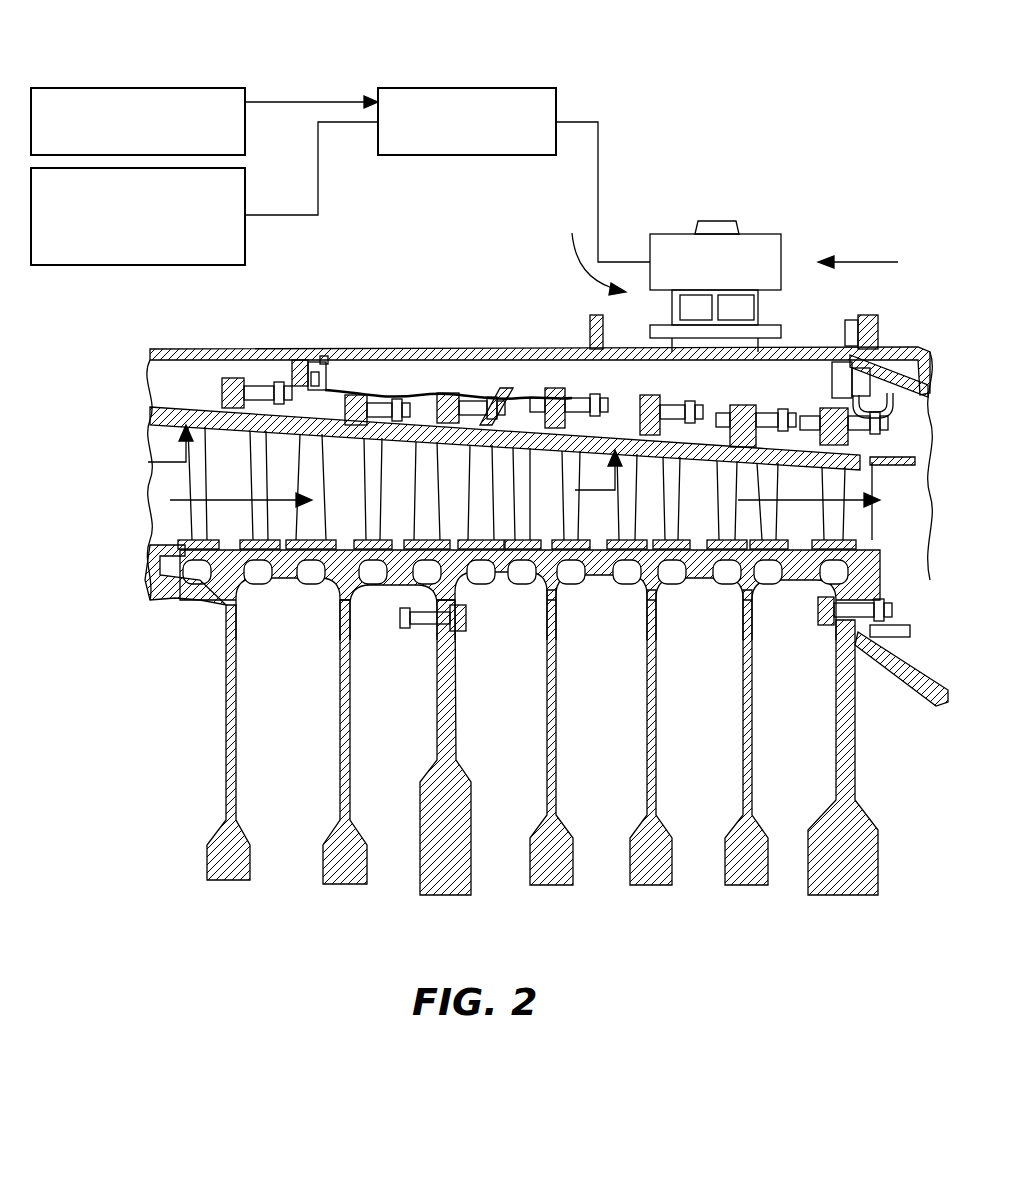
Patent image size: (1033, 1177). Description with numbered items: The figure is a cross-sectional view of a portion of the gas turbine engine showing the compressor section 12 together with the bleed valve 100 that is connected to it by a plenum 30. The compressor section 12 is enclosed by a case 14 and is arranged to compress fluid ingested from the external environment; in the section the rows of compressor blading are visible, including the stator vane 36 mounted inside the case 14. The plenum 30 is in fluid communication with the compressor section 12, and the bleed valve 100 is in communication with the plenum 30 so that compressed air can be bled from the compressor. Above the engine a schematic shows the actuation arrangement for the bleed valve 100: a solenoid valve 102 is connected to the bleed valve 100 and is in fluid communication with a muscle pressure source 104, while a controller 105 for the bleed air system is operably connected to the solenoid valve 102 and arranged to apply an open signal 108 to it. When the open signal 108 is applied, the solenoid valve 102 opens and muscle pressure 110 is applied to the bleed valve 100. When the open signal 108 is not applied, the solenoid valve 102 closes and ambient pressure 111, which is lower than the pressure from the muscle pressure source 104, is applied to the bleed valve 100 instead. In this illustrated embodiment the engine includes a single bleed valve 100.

The compressor section 12 is at (240, 934).
The case 14 is at (302, 350).
The plenum 30 is at (492, 383).
The stator vane 36 is at (497, 495).
The bleed valve 100 is at (670, 190).
The solenoid valve 102 is at (423, 88).
The muscle pressure source 104 is at (72, 266).
The controller 105 is at (98, 88).
The open signal 108 is at (307, 102).
The muscle pressure 110 is at (573, 267).
The ambient pressure 111 is at (861, 262).